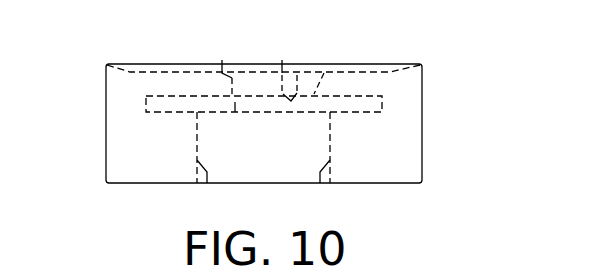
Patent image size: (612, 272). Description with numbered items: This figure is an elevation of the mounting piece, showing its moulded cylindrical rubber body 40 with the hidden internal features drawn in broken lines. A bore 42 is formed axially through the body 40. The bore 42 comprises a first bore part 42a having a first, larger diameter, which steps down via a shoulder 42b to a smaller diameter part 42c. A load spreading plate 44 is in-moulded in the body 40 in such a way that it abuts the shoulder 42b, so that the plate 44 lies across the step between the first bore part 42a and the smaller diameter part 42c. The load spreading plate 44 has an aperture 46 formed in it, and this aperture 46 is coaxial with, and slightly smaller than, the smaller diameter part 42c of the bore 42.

The cylindrical rubber body 40 is at (422, 136).
The bore 42 is at (317, 188).
The first bore part 42a is at (207, 188).
The shoulder 42b is at (333, 69).
The smaller diameter part 42c is at (218, 54).
The load spreading plate 44 is at (146, 99).
The aperture 46 is at (278, 54).